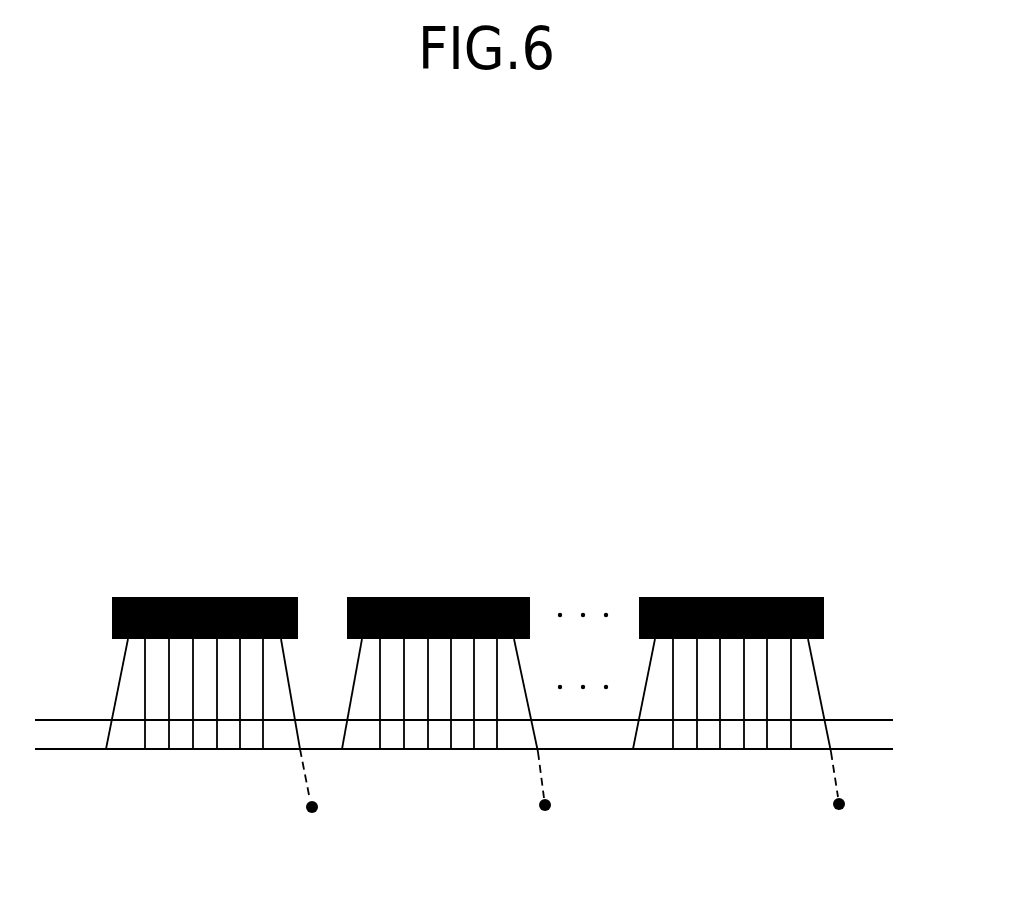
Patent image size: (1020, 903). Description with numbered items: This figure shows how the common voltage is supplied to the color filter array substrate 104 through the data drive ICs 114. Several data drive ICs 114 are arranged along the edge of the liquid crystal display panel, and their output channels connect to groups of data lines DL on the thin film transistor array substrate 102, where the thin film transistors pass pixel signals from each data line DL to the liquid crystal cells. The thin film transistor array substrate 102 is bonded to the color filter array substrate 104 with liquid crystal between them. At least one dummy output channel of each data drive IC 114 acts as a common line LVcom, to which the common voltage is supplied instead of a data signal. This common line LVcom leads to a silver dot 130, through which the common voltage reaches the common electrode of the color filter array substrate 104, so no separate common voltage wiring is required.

The data drive IC 114 is at (143, 597).
The thin film transistor array substrate 102 is at (868, 722).
The color filter array substrate 104 is at (931, 798).
The silver dot 130 is at (545, 811).
The data line DL is at (270, 772).
The common line LVcom is at (308, 811).